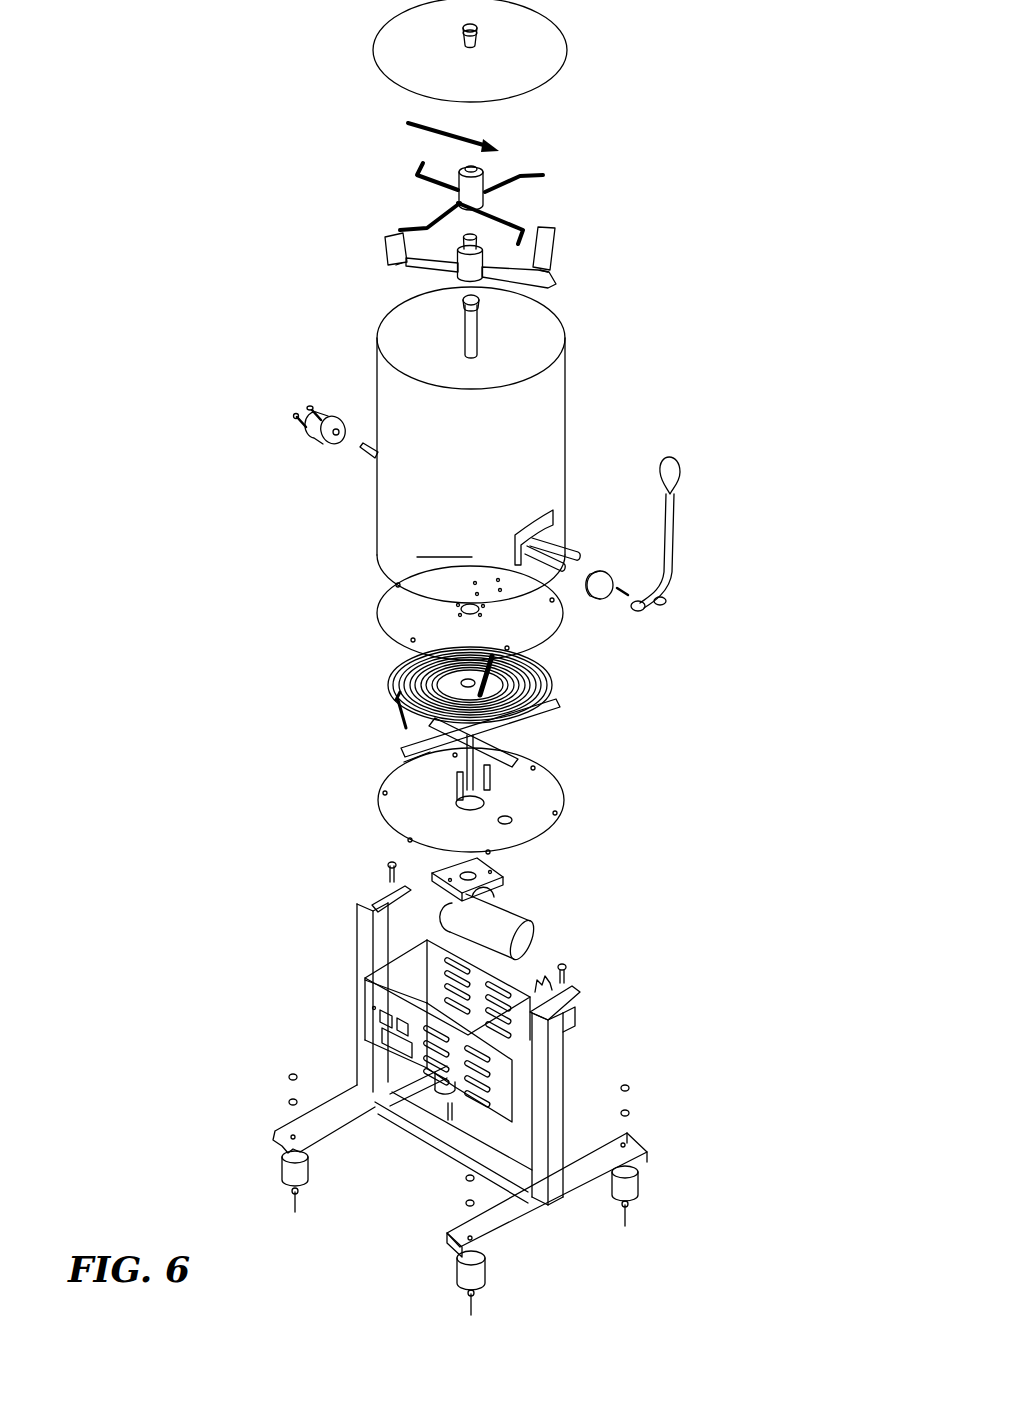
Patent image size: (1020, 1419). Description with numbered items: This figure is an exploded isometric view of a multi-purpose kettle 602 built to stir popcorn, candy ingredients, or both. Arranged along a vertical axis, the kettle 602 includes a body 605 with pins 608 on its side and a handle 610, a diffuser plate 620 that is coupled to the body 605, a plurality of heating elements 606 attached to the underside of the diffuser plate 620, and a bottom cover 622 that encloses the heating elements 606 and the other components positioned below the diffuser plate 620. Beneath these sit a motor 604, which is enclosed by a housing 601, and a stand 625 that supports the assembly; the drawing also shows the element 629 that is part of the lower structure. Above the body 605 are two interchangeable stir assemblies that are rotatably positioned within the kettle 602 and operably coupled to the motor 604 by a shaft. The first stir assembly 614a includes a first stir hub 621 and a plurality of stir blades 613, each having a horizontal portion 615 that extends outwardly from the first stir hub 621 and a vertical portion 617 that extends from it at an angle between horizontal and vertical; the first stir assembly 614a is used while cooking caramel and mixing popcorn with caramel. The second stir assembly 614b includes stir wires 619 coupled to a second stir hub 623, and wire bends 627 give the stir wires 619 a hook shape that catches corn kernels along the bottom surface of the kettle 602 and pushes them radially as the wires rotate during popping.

The housing 601 is at (500, 1110).
The multi-purpose kettle 602 is at (722, 248).
The motor 604 is at (510, 927).
The body 605 is at (555, 398).
The heating elements 606 is at (392, 682).
The pins 608 is at (565, 537).
The handle 610 is at (676, 532).
The stir blades 613 is at (372, 258).
The first stir assembly 614a is at (593, 226).
The second stir assembly 614b is at (503, 167).
The horizontal portions 615 is at (423, 270).
The vertical portions 617 is at (388, 243).
The stir wires 619 is at (400, 230).
The diffuser plate 620 is at (548, 618).
The first stir hub 621 is at (462, 282).
The bottom cover 622 is at (548, 782).
The second stir hub 623 is at (462, 200).
The stand 625 is at (568, 1109).
The wire bends 627 is at (518, 232).
The heater housing 629 is at (618, 976).